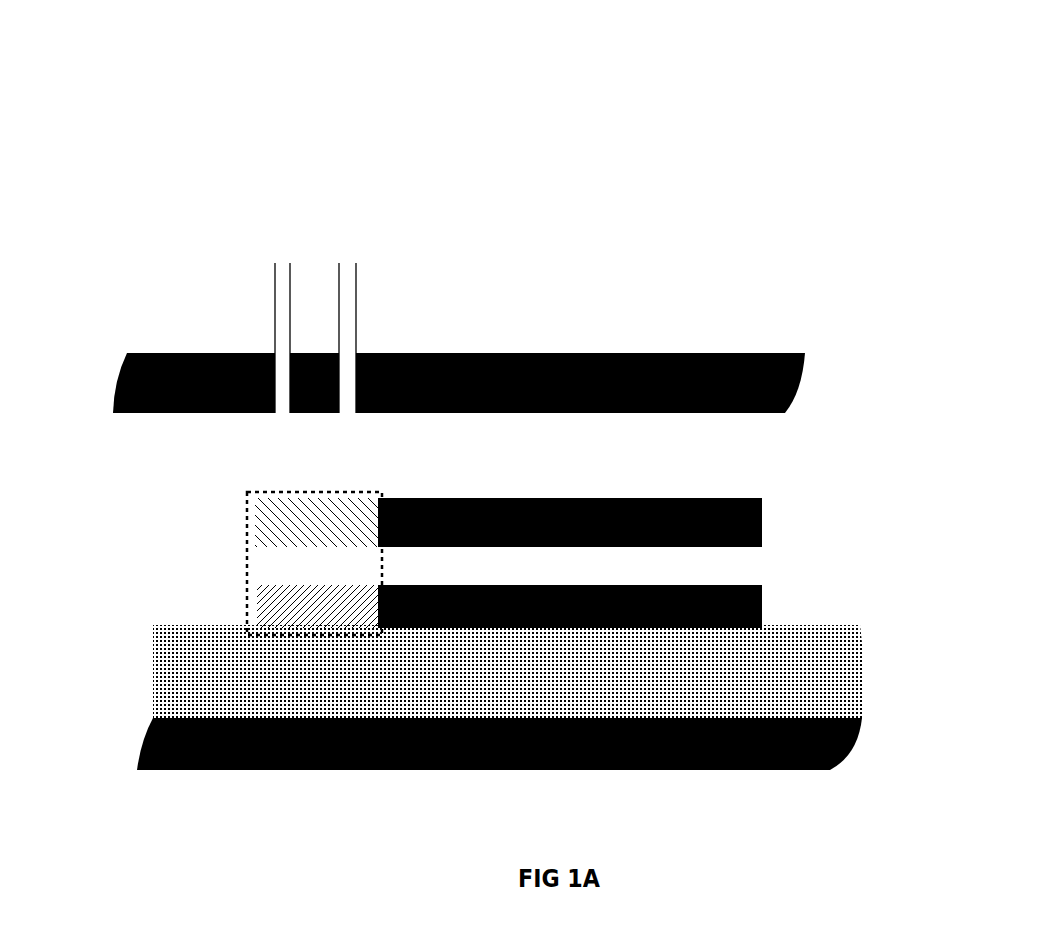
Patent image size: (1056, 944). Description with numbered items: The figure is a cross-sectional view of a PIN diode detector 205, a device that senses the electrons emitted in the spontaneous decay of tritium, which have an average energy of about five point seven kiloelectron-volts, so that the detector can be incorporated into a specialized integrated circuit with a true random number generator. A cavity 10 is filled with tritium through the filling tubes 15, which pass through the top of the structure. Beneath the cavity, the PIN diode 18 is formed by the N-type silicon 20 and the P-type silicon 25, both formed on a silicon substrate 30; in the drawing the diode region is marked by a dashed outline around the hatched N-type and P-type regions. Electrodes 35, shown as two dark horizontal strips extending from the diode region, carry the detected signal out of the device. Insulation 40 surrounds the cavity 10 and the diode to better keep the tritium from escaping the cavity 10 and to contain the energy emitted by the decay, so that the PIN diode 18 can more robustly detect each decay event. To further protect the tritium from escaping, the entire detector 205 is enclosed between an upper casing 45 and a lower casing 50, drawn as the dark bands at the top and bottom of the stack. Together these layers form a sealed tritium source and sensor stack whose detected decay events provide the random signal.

The cavity 10 is at (325, 462).
The filling tubes 15 is at (290, 263).
The PIN diode 18 is at (249, 632).
The N-type silicon 20 is at (317, 521).
The P-type silicon 25 is at (317, 606).
The silicon substrate 30 is at (815, 642).
The electrodes 35 is at (762, 582).
The insulation 40 is at (760, 462).
The upper casing 45 is at (580, 367).
The lower casing 50 is at (830, 738).
The detector 205 is at (880, 167).